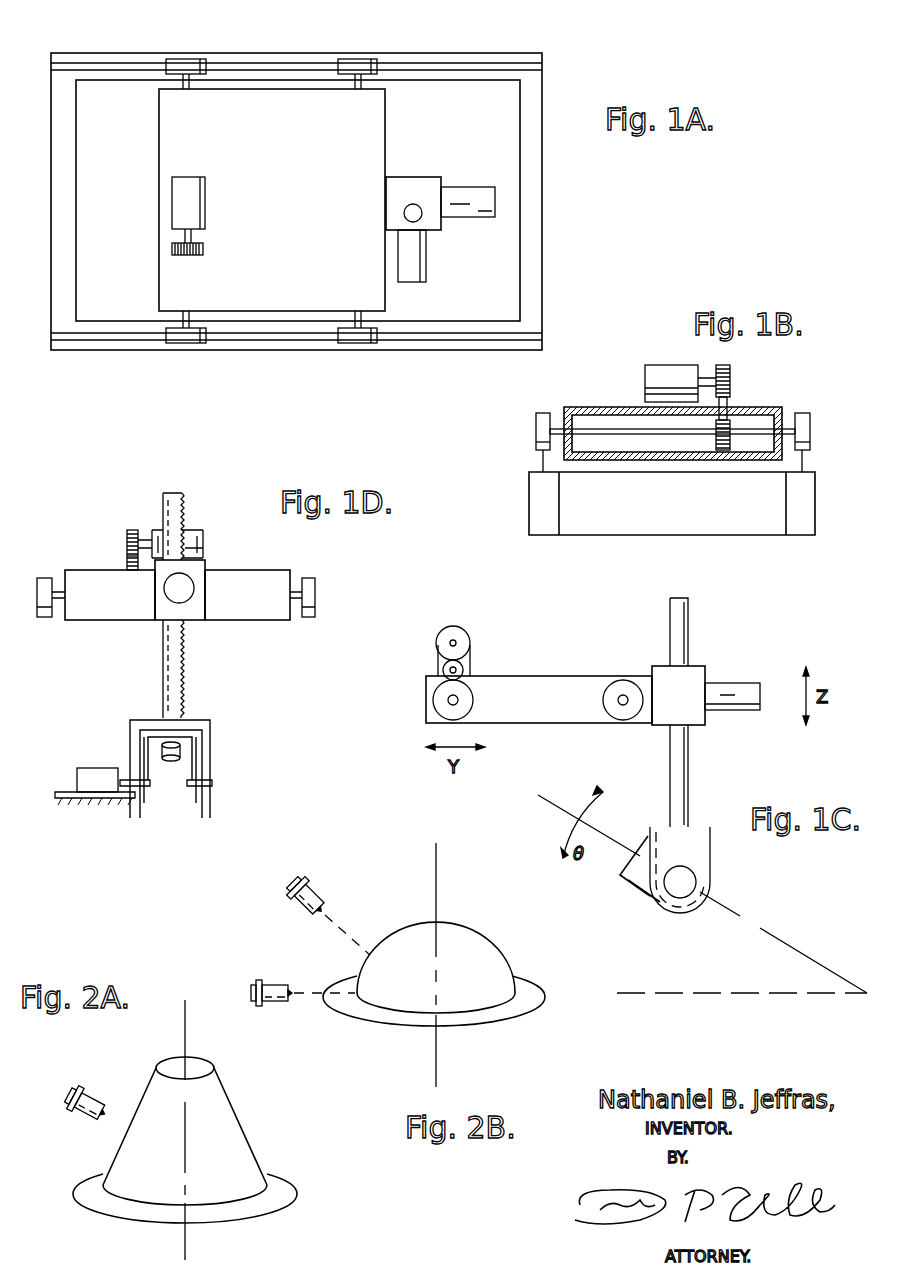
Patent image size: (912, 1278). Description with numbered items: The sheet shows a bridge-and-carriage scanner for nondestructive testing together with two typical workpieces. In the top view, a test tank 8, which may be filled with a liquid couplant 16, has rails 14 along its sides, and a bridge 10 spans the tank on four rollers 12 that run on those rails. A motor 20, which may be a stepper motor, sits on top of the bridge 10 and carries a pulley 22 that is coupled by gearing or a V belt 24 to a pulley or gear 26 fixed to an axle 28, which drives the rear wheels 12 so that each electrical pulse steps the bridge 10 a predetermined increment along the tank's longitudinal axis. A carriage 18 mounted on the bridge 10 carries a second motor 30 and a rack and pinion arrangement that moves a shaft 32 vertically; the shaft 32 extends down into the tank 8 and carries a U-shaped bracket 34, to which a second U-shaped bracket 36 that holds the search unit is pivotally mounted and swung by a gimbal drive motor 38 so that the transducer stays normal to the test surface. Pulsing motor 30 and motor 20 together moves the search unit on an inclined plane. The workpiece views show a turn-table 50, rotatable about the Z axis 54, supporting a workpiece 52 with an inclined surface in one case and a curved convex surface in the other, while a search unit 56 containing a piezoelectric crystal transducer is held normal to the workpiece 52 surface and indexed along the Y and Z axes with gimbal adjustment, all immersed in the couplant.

In FIG. 1A, the test tank 8 is at (543, 54).
In FIG. 1A, the bridge 10 is at (315, 164).
In FIG. 1B, the bridge 10 is at (784, 416).
In FIG. 1D, the bridge 10 is at (75, 568).
In FIG. 1C, the bridge 10 is at (571, 676).
In FIG. 1A, the rollers 12 is at (206, 60).
In FIG. 1B, the rollers 12 is at (540, 427).
In FIG. 1D, the rollers 12 is at (48, 620).
In FIG. 1C, the rollers 12 is at (433, 706).
In FIG. 1A, the rails 14 is at (461, 64).
In FIG. 1B, the rails 14 is at (540, 460).
In FIG. 1A, the liquid couplant 16 is at (128, 180).
In FIG. 1B, the liquid couplant 16 is at (806, 516).
In FIG. 1A, the carriage 18 is at (405, 216).
In FIG. 1C, the carriage 18 is at (700, 716).
In FIG. 1A, the motor 20 is at (205, 180).
In FIG. 1B, the motor 20 is at (662, 380).
In FIG. 1D, the motor 20 is at (198, 535).
In FIG. 1C, the motor 20 is at (438, 649).
In FIG. 1A, the pulley 22 is at (205, 252).
In FIG. 1B, the pulley 22 is at (731, 375).
In FIG. 1D, the pulley 22 is at (132, 530).
In FIG. 1C, the pulley 22 is at (464, 638).
In FIG. 1B, the gearing or V belt 24 is at (728, 412).
In FIG. 1D, the gearing or V belt 24 is at (126, 562).
In FIG. 1C, the gearing or V belt 24 is at (462, 672).
In FIG. 1B, the pulley or gear 26 is at (722, 452).
In FIG. 1B, the axle 28 is at (610, 436).
In FIG. 1A, the motor 30 is at (489, 188).
In FIG. 1D, the motor 30 is at (183, 596).
In FIG. 1C, the motor 30 is at (740, 686).
In FIG. 1D, the shaft 32 is at (184, 503).
In FIG. 1C, the shaft 32 is at (690, 650).
In FIG. 1D, the U-shaped bracket 34 is at (211, 730).
In FIG. 1C, the U-shaped bracket 34 is at (666, 908).
In FIG. 1D, the second U-shaped bracket 36 is at (183, 754).
In FIG. 1C, the second U-shaped bracket 36 is at (634, 880).
In FIG. 1A, the gimbal drive motor 38 is at (420, 265).
In FIG. 1D, the gimbal drive motor 38 is at (78, 768).
In FIG. 2B, the turn-table 50 is at (522, 1010).
In FIG. 2A, the turn-table 50 is at (88, 1200).
In FIG. 2B, the workpiece 52 is at (485, 962).
In FIG. 2A, the workpiece 52 is at (235, 1138).
In FIG. 2B, the Z axis 54 is at (438, 902).
In FIG. 2A, the Z axis 54 is at (188, 1036).
In FIG. 2B, the search unit 56 is at (322, 892).
In FIG. 2A, the search unit 56 is at (98, 1096).